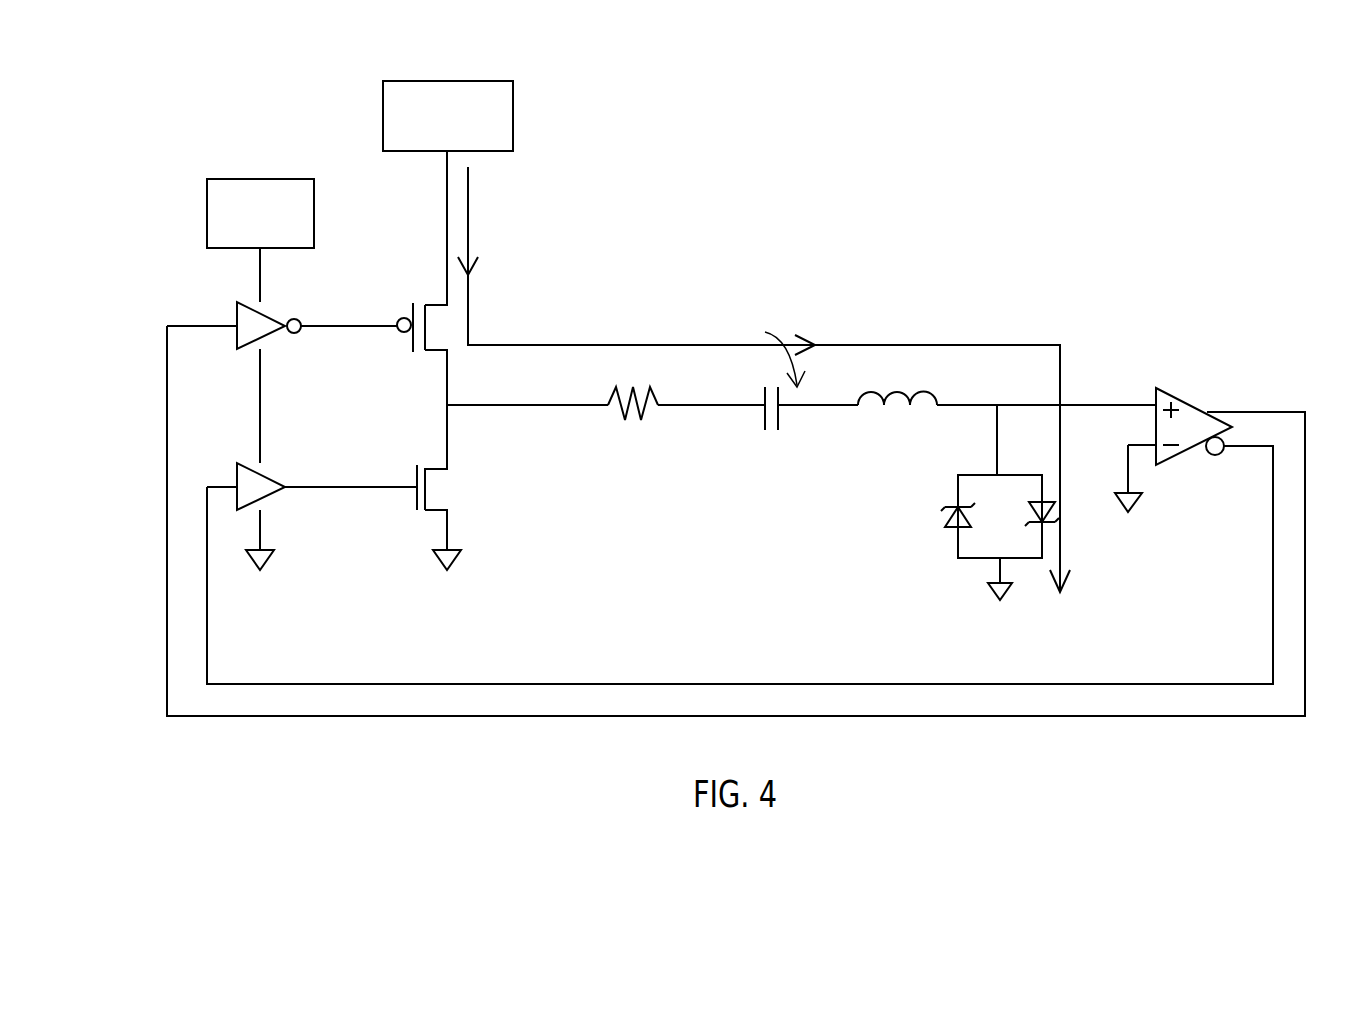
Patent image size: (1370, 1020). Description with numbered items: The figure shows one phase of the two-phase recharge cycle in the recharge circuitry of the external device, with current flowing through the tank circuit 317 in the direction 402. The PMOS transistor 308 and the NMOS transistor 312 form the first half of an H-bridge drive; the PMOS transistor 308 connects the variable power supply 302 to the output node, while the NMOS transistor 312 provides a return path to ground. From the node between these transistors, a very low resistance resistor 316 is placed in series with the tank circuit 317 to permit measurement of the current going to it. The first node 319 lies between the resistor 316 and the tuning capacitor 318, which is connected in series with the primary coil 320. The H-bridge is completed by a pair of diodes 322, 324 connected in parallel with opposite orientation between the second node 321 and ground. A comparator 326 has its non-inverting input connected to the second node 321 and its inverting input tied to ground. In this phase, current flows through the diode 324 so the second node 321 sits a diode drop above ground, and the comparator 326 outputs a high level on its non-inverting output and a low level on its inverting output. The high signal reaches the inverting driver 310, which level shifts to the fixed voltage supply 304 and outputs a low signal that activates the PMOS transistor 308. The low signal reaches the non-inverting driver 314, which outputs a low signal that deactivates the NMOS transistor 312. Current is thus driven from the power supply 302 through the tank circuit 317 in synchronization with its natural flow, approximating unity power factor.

The power supply 302 is at (513, 118).
The fixed voltage supply 304 is at (252, 179).
The inverting driver 310 is at (235, 310).
The non-inverting driver 314 is at (237, 465).
The PMOS transistor 308 is at (428, 358).
The NMOS transistor 312 is at (420, 518).
The direction of current flow 402 is at (583, 345).
The tank circuit 317 is at (772, 346).
The resistor 316 is at (622, 420).
The first node 319 is at (702, 405).
The tuning capacitor 318 is at (772, 432).
The primary coil 320 is at (873, 405).
The second node 321 is at (968, 403).
The diode 322 is at (945, 508).
The diode 324 is at (1043, 523).
The comparator 326 is at (1185, 402).